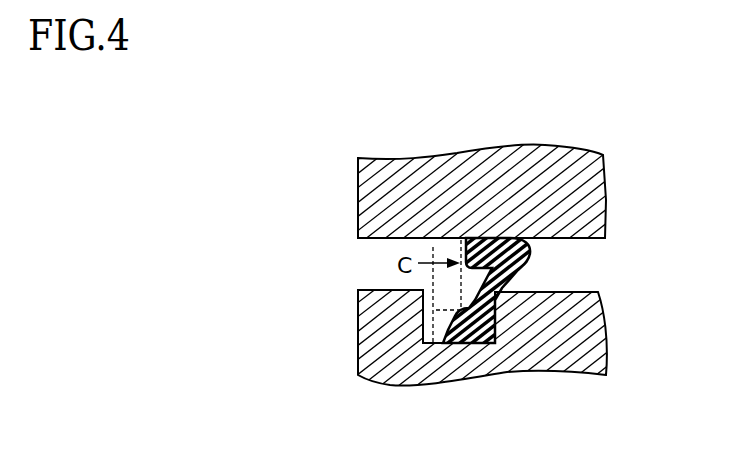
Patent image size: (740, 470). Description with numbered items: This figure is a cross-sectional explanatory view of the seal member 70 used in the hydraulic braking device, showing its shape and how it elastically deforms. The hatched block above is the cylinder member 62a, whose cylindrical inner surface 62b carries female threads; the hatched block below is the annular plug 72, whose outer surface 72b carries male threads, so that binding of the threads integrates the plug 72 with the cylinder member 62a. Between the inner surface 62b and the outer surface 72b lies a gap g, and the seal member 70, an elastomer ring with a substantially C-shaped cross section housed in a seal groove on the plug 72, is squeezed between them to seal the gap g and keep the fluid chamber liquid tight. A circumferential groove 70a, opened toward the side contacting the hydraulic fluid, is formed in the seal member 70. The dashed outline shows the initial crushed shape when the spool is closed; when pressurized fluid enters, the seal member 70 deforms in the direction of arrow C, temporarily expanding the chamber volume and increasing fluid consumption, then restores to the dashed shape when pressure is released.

The cylinder member 62a is at (577, 158).
The inner surface 62b is at (585, 239).
The seal member 70 is at (531, 252).
The groove 70a is at (461, 281).
The plug 72 is at (570, 364).
The outer surface 72b is at (586, 284).
The gap g is at (572, 272).